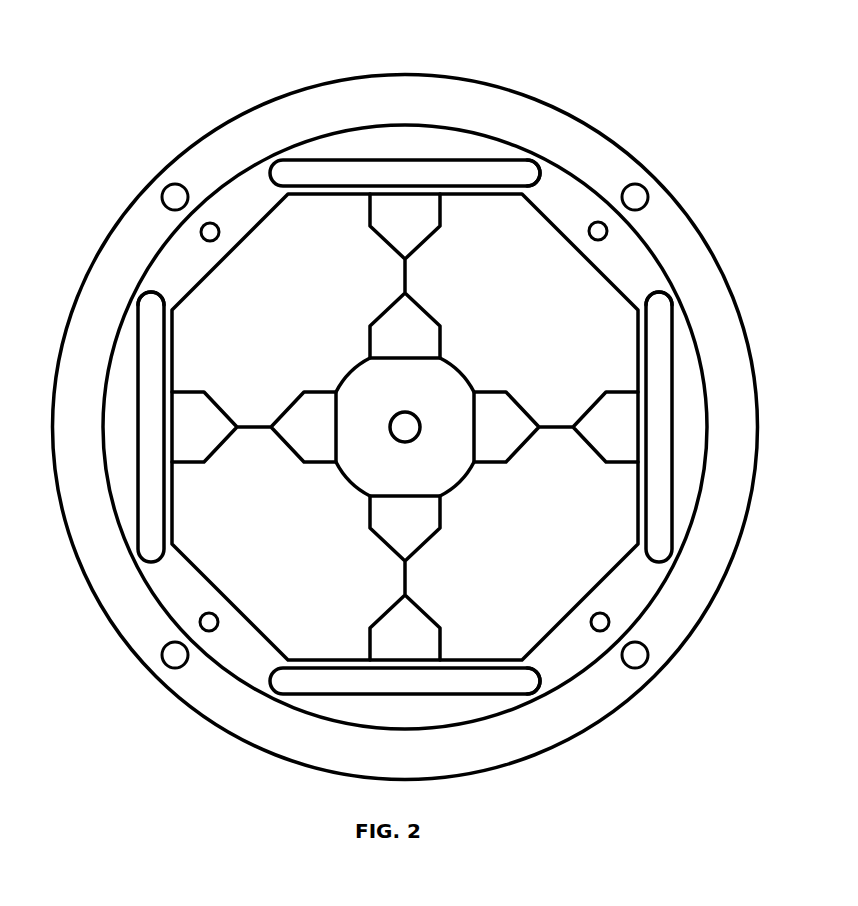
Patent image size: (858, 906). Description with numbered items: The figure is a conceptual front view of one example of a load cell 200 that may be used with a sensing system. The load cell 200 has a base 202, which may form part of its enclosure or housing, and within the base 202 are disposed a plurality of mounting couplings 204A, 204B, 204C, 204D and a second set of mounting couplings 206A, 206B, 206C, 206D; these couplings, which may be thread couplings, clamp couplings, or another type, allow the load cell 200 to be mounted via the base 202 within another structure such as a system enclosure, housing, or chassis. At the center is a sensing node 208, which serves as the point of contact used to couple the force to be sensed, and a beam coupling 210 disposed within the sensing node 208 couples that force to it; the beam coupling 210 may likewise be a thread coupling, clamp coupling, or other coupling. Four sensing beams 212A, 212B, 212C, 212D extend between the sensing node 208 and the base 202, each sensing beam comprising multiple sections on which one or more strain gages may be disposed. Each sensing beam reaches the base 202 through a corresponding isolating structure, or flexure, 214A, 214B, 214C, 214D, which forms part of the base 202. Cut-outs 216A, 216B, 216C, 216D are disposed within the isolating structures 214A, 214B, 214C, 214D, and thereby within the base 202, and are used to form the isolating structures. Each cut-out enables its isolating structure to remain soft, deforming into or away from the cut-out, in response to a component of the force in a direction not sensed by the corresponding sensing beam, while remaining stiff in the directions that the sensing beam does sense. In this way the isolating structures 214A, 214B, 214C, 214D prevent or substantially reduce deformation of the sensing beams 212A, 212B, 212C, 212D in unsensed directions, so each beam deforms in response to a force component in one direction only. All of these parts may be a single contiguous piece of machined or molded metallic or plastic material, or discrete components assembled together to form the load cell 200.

The load cell 200 is at (692, 70).
The base 202 is at (407, 98).
The mounting coupling 204A is at (641, 194).
The mounting coupling 204B is at (644, 651).
The mounting coupling 204C is at (181, 652).
The mounting coupling 204D is at (181, 193).
The mounting coupling 206A is at (604, 230).
The mounting coupling 206B is at (606, 620).
The mounting coupling 206C is at (215, 620).
The mounting coupling 206D is at (216, 231).
The sensing node 208 is at (458, 365).
The beam coupling 210 is at (403, 412).
The sensing beam 212A is at (425, 268).
The sensing beam 212B is at (553, 400).
The sensing beam 212C is at (425, 565).
The sensing beam 212D is at (258, 400).
The isolating structure 214A is at (405, 184).
The isolating structure 214B is at (652, 420).
The isolating structure 214C is at (452, 655).
The isolating structure 214D is at (178, 520).
The cut-out 216A is at (538, 177).
The cut-out 216B is at (661, 340).
The cut-out 216C is at (531, 672).
The cut-out 216D is at (159, 340).